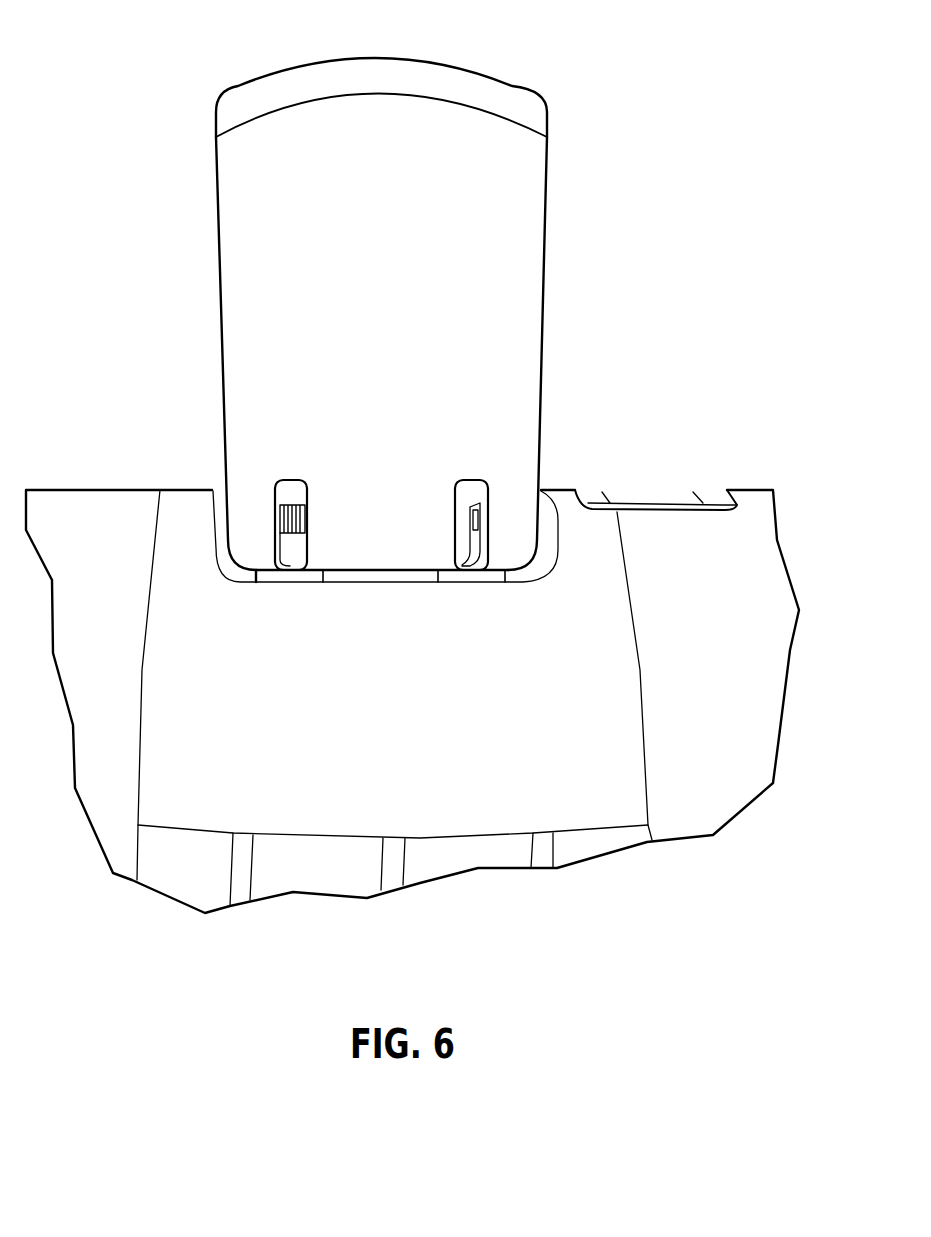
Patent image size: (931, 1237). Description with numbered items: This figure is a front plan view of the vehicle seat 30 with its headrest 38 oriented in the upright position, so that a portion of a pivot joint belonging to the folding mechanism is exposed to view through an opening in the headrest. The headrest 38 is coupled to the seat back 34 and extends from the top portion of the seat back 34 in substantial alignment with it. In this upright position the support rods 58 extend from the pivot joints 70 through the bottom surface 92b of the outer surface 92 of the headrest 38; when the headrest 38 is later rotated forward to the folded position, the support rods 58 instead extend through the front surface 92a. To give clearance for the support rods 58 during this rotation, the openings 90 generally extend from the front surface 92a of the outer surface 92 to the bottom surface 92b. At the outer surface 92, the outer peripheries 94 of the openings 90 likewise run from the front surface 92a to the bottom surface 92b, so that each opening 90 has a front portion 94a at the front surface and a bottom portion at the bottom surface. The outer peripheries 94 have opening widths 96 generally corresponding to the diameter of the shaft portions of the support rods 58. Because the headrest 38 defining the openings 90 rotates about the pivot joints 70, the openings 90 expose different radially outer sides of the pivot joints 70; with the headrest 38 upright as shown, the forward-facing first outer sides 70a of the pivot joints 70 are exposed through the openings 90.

The vehicle seat 30 is at (192, 100).
The seat back 34 is at (700, 556).
The headrest 38 is at (515, 130).
The support rods 58 is at (288, 565).
The pivot joints 70 is at (300, 550).
The first outer sides 70a is at (298, 537).
The openings 90 is at (290, 494).
The outer surface 92 is at (392, 143).
The front surface 92a is at (394, 430).
The bottom surface 92b is at (395, 582).
The outer peripheries 94 is at (275, 522).
The front portion 94a is at (311, 482).
The opening widths 96 is at (308, 475).